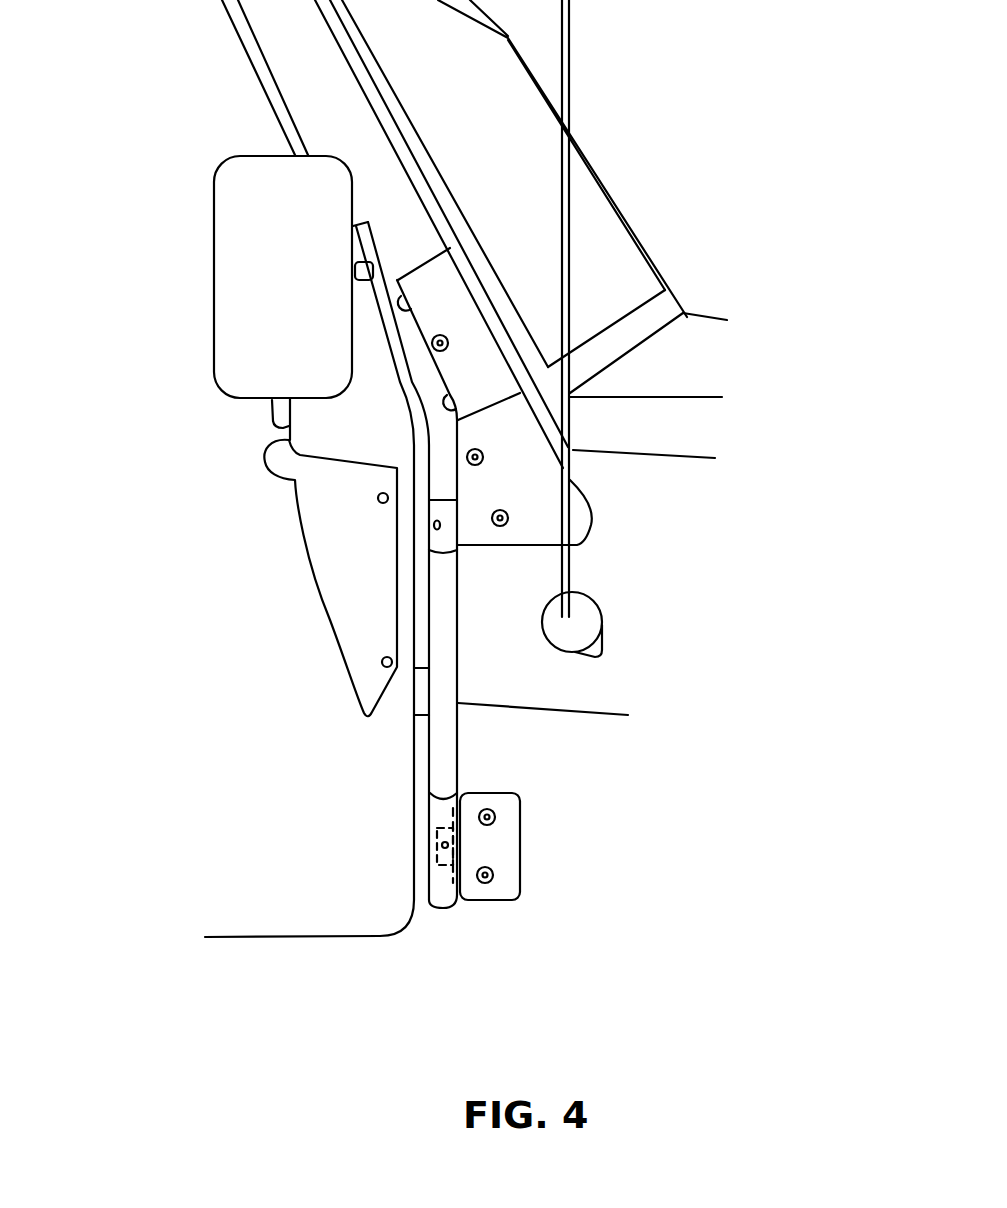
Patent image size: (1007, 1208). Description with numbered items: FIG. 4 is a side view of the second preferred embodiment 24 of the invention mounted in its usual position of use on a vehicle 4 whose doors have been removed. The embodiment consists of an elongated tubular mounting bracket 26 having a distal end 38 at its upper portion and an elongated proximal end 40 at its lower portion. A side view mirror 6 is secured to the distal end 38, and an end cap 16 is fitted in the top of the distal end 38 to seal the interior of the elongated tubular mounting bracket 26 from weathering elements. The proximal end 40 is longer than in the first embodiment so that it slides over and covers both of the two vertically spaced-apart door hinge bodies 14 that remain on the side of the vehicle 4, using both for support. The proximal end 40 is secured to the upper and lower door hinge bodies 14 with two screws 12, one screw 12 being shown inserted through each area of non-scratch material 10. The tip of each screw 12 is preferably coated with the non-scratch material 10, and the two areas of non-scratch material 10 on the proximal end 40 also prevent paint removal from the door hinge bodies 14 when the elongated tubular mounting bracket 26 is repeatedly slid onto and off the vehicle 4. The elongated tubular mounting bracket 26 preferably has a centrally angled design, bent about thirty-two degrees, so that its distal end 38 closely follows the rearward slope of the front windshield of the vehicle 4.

The vehicle 4 is at (673, 274).
The side view mirror 6 is at (260, 170).
The non-scratch material 10 is at (435, 545).
The screw 12 is at (432, 524).
The door hinge body 14 is at (435, 862).
The end cap 16 is at (368, 222).
The second preferred embodiment 24 is at (194, 281).
The elongated tubular mounting bracket 26 is at (443, 370).
The distal end 38 is at (402, 270).
The proximal end 40 is at (463, 553).